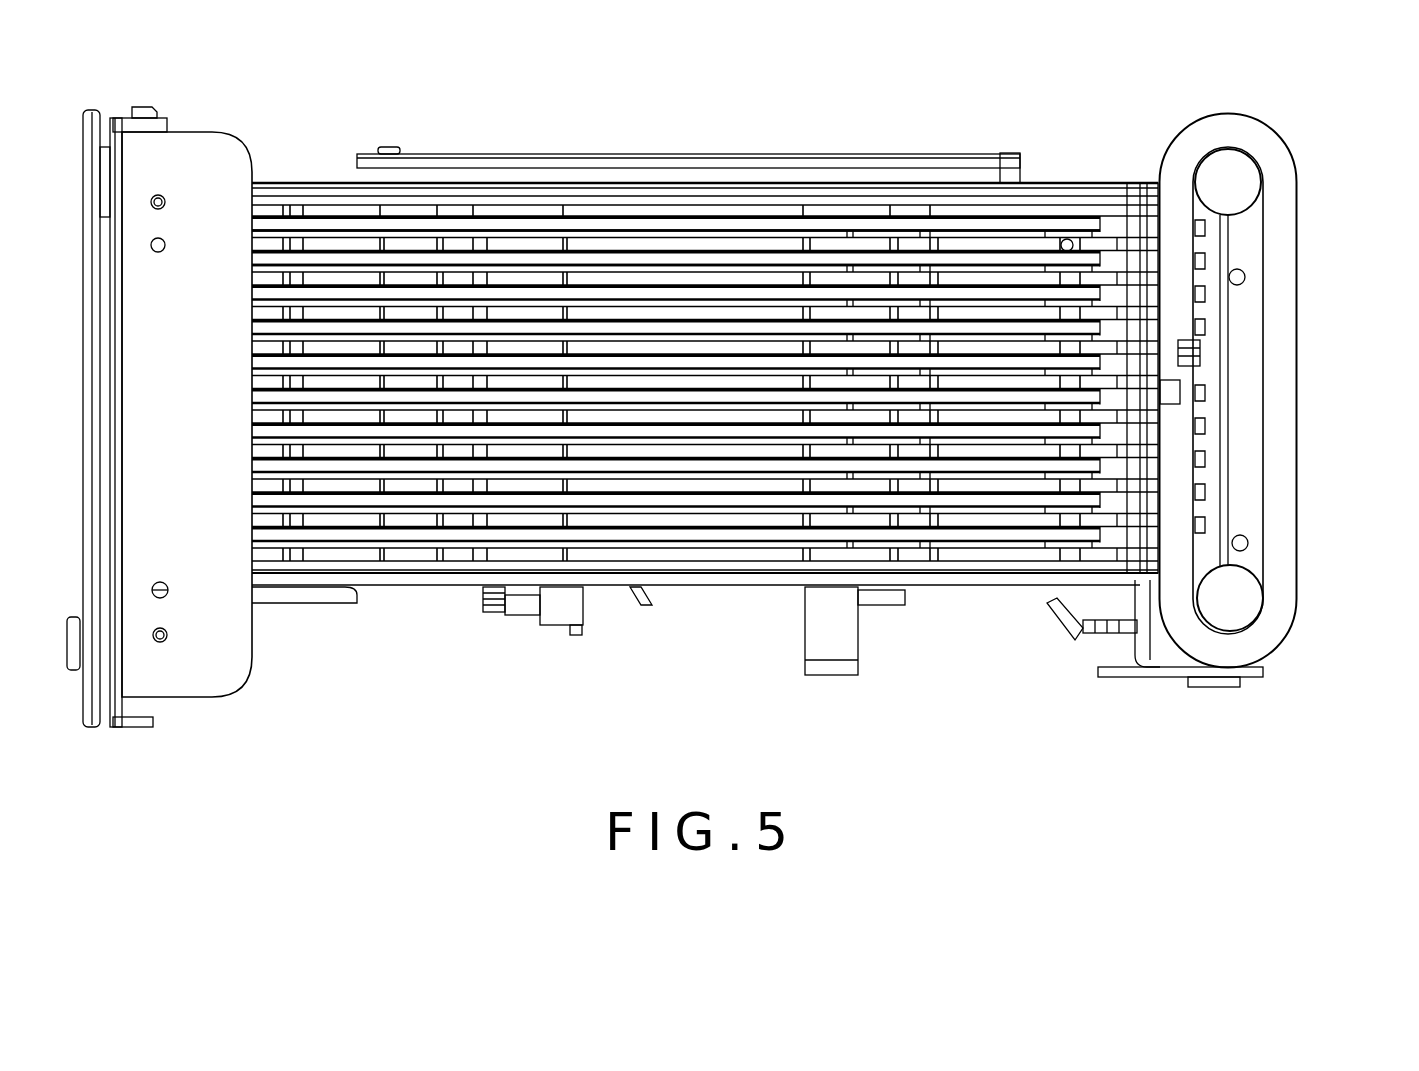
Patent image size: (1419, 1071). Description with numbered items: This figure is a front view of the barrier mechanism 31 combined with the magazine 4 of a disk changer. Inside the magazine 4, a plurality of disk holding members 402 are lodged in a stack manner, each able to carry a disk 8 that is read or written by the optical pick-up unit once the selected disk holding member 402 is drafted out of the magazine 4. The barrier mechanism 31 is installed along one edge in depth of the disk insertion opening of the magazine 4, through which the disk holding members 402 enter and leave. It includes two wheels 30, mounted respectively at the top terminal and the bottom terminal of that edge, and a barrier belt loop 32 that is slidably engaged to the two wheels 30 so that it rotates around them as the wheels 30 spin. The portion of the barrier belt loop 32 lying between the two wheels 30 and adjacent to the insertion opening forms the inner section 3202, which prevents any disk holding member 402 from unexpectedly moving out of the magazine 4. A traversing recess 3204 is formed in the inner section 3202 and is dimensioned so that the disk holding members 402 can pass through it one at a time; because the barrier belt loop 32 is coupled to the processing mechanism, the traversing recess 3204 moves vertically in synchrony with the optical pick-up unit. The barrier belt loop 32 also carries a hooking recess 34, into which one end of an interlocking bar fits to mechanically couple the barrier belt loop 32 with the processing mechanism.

The magazine 4 is at (866, 150).
The disk holding members 402 is at (490, 267).
The disk 8 is at (652, 258).
The barrier mechanism 31 is at (1288, 356).
The wheels 30 is at (1240, 183).
The barrier belt loop 32 is at (1280, 473).
The hooking recess 34 is at (1200, 345).
The inner section 3202 is at (1185, 518).
The traversing recess 3204 is at (1192, 393).